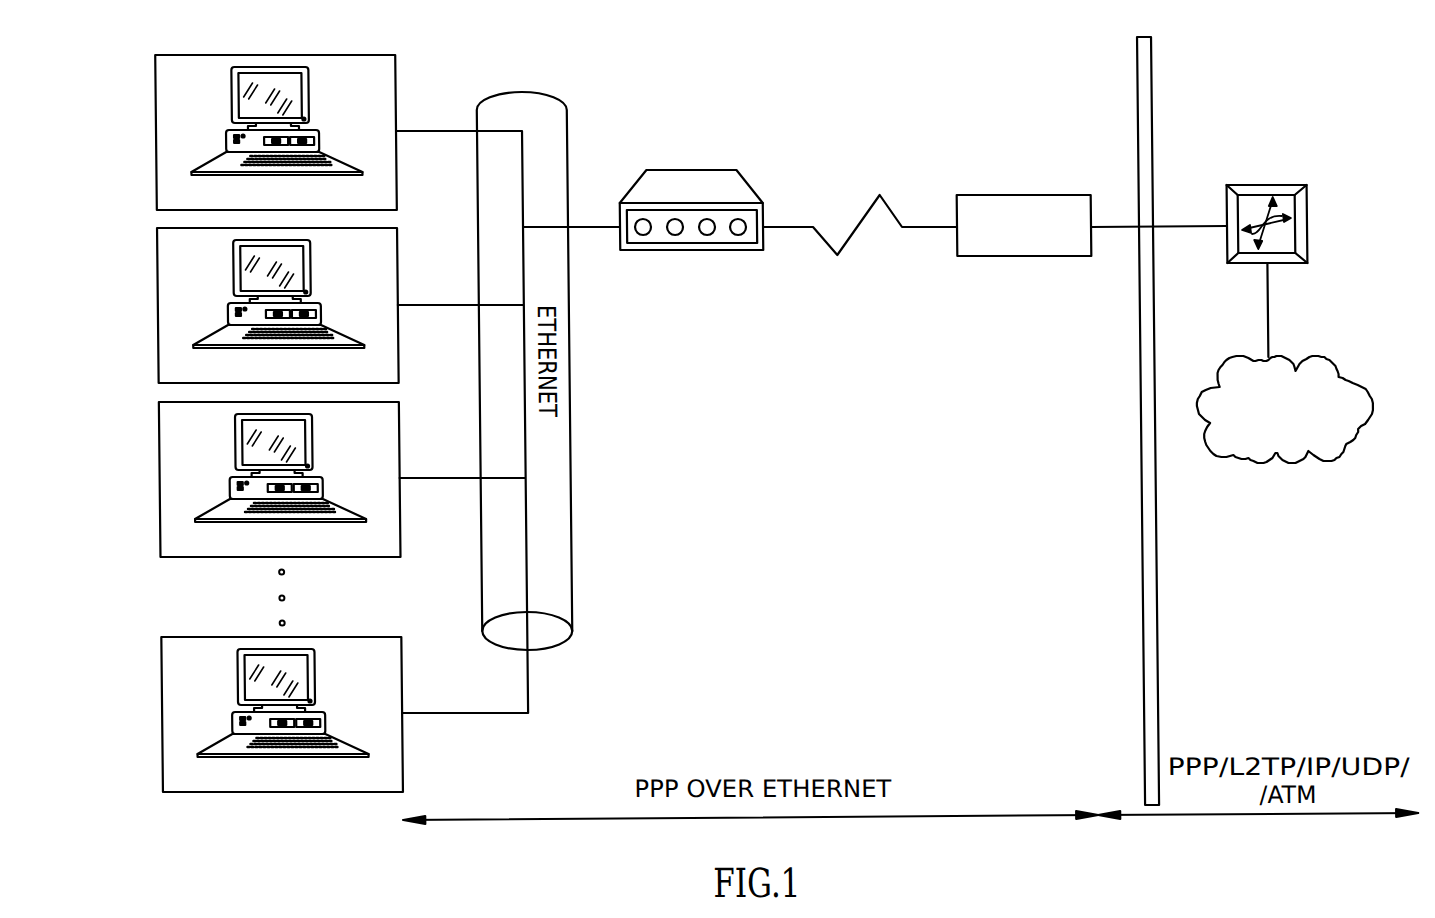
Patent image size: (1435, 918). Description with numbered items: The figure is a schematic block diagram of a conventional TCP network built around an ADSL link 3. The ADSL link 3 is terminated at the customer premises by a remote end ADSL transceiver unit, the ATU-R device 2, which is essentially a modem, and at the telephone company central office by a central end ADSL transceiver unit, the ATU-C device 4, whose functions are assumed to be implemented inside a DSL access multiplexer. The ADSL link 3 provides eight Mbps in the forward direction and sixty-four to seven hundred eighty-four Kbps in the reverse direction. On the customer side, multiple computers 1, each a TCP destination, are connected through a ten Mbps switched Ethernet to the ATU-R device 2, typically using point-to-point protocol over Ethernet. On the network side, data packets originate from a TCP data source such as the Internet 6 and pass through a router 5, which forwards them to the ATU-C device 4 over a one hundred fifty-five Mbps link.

The computer 1 is at (157, 135).
The remote end ADSL transceiver unit (ATU-R) device 2 is at (688, 170).
The ADSL link 3 is at (857, 223).
The central end ADSL transceiver unit (ATU-C) device 4 is at (1008, 195).
The router 5 is at (1307, 220).
The Internet 6 is at (1340, 368).